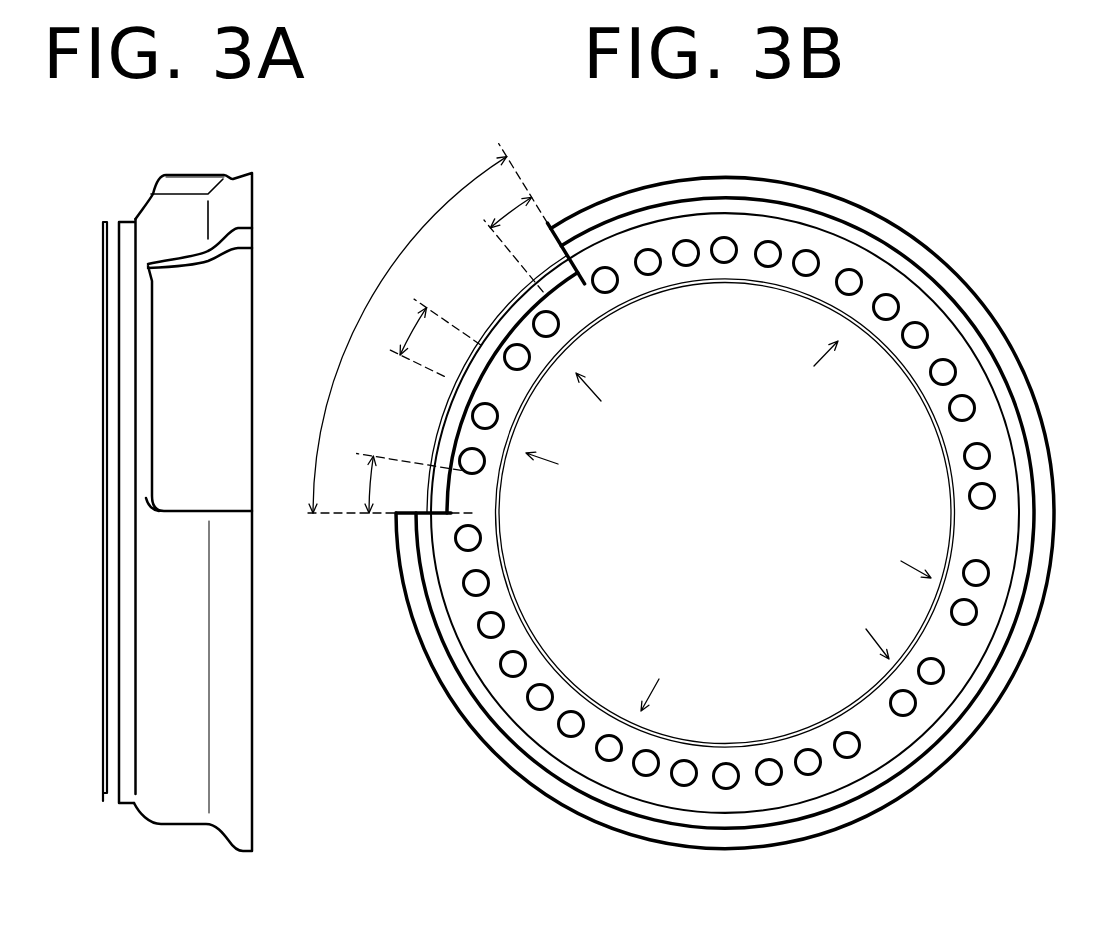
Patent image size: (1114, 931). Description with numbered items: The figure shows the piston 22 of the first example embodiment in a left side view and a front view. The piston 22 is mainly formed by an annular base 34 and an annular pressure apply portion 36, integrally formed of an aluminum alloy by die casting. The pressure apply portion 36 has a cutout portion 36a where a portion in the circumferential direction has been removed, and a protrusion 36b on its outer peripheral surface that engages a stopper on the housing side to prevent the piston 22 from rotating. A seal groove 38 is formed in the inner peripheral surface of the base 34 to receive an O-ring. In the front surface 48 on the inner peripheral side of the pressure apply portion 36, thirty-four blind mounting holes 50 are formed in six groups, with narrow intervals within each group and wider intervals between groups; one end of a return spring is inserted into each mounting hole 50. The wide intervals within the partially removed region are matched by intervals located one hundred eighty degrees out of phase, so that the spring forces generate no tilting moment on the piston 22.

In FIG. 3A, the piston 22 is at (292, 180).
In FIG. 3B, the piston 22 is at (1002, 205).
In FIG. 3A, the base 34 is at (128, 221).
In FIG. 3B, the base 34 is at (937, 437).
In FIG. 3A, the pressure apply portion 36 is at (227, 485).
In FIG. 3B, the pressure apply portion 36 is at (817, 192).
In FIG. 3A, the cutout portion 36a is at (152, 383).
In FIG. 3B, the cutout portion 36a is at (500, 313).
In FIG. 3A, the protrusion 36b is at (180, 182).
In FIG. 3A, the seal groove 38 is at (107, 460).
In FIG. 3B, the front surface 48 is at (533, 670).
In FIG. 3B, the mounting holes 50 is at (722, 255).